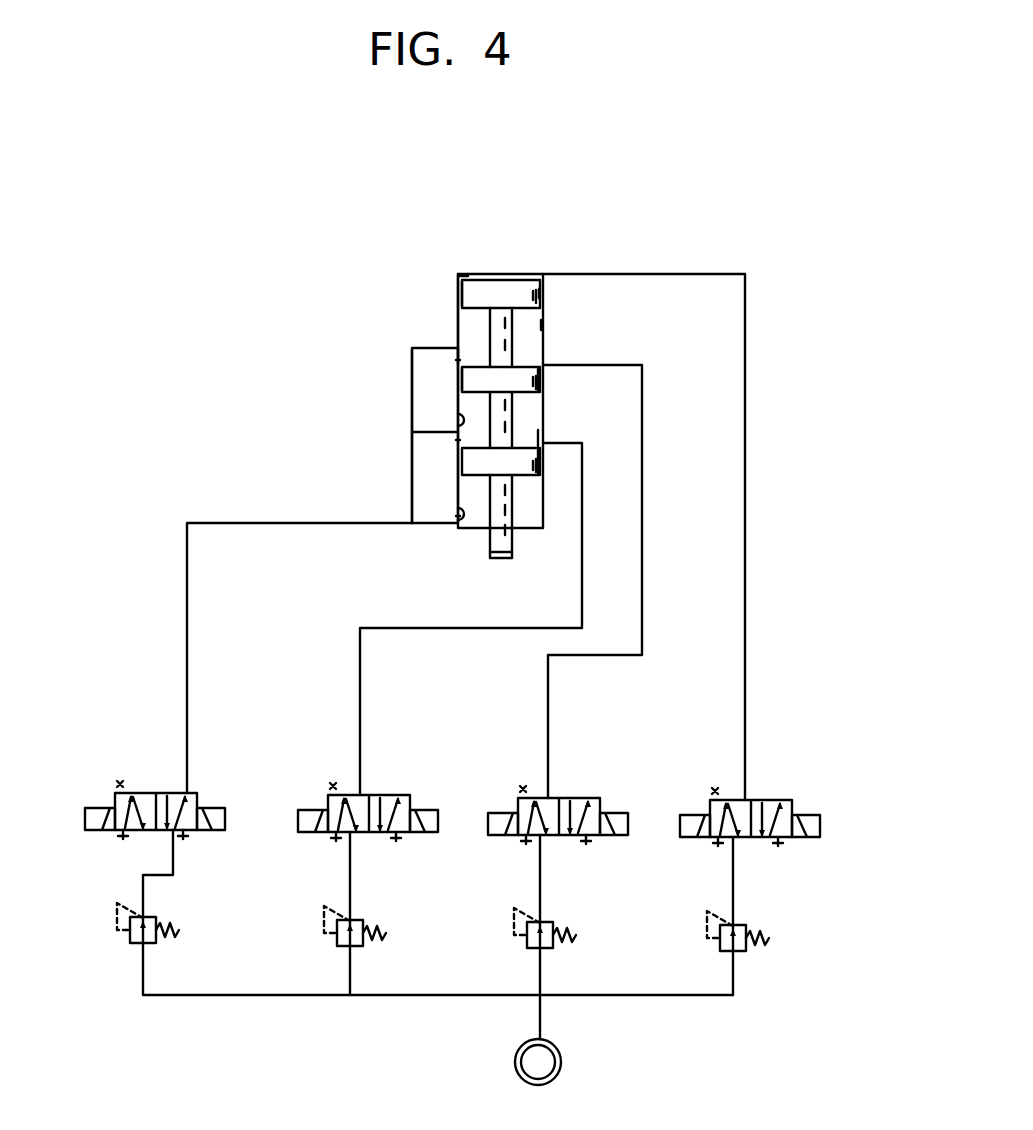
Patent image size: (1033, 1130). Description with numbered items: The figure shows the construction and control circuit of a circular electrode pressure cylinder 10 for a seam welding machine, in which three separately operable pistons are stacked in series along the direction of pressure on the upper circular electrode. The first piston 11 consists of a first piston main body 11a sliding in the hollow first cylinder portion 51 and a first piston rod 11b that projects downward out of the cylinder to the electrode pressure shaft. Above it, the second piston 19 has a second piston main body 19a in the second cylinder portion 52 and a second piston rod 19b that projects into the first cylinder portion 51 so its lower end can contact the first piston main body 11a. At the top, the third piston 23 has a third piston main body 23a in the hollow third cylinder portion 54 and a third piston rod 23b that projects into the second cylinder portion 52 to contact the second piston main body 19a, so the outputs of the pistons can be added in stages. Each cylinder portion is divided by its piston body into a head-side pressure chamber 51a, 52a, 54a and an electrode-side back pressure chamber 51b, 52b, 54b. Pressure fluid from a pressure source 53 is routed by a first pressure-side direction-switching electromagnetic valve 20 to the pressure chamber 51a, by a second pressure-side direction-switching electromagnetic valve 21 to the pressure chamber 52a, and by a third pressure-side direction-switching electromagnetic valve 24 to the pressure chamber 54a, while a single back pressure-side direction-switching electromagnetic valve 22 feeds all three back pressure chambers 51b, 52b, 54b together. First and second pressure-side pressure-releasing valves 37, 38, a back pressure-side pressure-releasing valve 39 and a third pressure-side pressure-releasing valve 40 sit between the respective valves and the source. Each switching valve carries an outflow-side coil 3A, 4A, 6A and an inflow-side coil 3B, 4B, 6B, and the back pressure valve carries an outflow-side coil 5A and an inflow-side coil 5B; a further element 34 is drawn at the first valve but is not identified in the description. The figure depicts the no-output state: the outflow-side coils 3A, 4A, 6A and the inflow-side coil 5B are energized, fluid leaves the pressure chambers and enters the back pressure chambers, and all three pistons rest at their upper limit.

The circular electrode pressure cylinder 10 is at (575, 345).
The first piston 11 is at (525, 502).
The first piston main body 11a is at (535, 458).
The first piston rod 11b is at (500, 553).
The second piston 19 is at (520, 412).
The second piston main body 19a is at (543, 385).
The second piston rod 19b is at (535, 432).
The third piston 23 is at (543, 305).
The third piston main body 23a is at (462, 300).
The third piston rod 23b is at (462, 366).
The first cylinder portion 51 is at (458, 490).
The pressure chamber of the first cylinder portion 51a is at (458, 440).
The back pressure chamber of the first cylinder portion 51b is at (465, 516).
The second cylinder portion 52 is at (458, 403).
The pressure chamber of the second cylinder portion 52a is at (458, 363).
The back pressure chamber of the second cylinder portion 52b is at (412, 432).
The third cylinder portion 54 is at (458, 326).
The pressure chamber of the third cylinder portion 54a is at (458, 279).
The back pressure chamber of the third cylinder portion 54b is at (530, 327).
The first pressure-side direction-switching electromagnetic valve 20 is at (375, 795).
The second pressure-side direction-switching electromagnetic valve 21 is at (560, 798).
The back pressure-side direction-switching electromagnetic valve 22 is at (150, 793).
The third pressure-side direction-switching electromagnetic valve 24 is at (757, 800).
The solenoid 34 is at (305, 832).
The first pressure-side pressure-releasing valve 37 is at (352, 922).
The second pressure-side pressure-releasing valve 38 is at (542, 924).
The back pressure-side pressure-releasing valve 39 is at (146, 920).
The third pressure-side pressure-releasing valve 40 is at (735, 927).
The pressure source 53 is at (562, 1062).
The outflow-side coil 5A is at (91, 798).
The inflow-side coil 5B is at (220, 798).
The outflow-side coil 3A is at (305, 837).
The inflow-side coil 3B is at (433, 801).
The outflow-side coil 4A is at (495, 804).
The inflow-side coil 4B is at (622, 804).
The outflow-side coil 6A is at (686, 806).
The inflow-side coil 6B is at (816, 806).